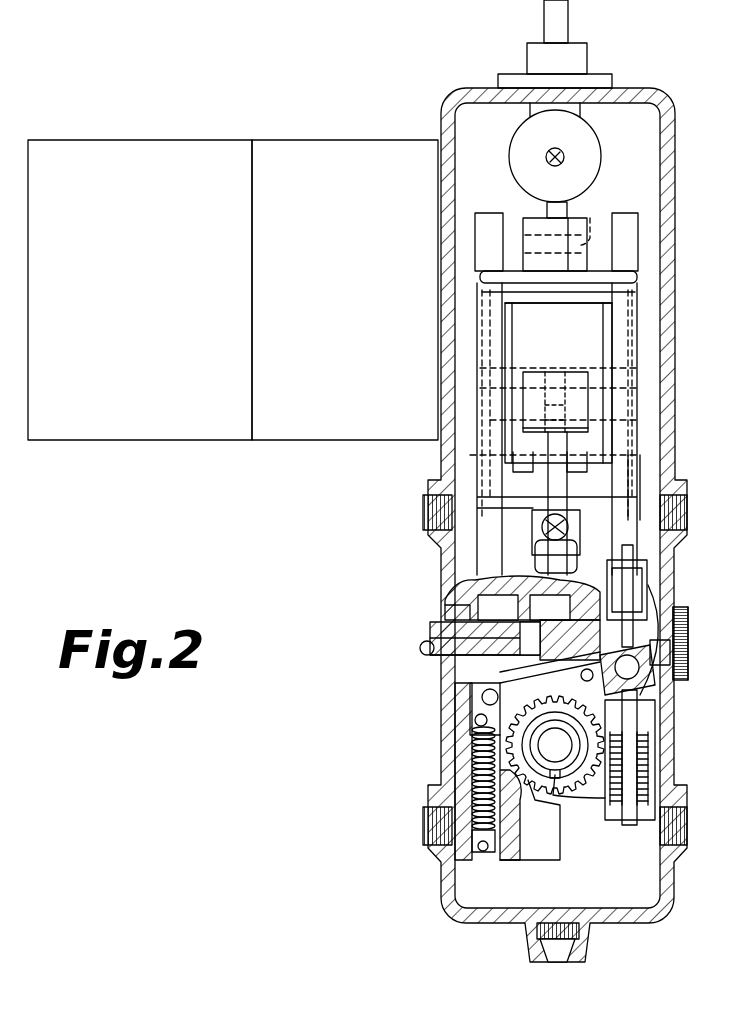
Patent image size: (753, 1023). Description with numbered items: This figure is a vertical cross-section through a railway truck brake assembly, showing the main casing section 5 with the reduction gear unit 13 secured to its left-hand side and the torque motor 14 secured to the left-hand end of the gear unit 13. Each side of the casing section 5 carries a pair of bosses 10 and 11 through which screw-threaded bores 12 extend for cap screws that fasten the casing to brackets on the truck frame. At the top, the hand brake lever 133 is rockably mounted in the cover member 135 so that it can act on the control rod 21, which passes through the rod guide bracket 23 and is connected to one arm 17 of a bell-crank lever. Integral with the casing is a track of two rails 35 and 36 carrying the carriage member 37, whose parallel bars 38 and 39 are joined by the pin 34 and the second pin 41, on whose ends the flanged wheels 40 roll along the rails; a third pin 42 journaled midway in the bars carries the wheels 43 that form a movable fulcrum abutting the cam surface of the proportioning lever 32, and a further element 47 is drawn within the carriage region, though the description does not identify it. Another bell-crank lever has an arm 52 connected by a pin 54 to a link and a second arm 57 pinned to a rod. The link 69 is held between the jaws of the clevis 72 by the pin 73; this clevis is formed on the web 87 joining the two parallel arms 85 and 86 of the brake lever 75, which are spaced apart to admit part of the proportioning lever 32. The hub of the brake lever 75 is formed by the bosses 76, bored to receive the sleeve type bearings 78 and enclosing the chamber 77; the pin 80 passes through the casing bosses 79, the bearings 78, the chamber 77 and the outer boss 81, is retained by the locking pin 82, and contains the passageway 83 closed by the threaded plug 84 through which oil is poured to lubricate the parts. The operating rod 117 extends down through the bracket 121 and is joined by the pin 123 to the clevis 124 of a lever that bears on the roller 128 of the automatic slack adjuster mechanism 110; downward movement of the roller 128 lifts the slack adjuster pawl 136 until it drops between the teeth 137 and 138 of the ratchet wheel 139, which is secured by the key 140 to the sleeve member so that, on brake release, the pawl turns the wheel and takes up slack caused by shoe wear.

The main casing section 5 is at (670, 190).
The boss 10 is at (432, 487).
The boss 11 is at (432, 795).
The screw-threaded bore 12 is at (423, 507).
The reduction gear unit 13 is at (305, 418).
The torque motor 14 is at (104, 418).
The arm 17 is at (555, 207).
The control rod 21 is at (565, 158).
The rod guide bracket 23 is at (578, 131).
The proportioning lever 32 is at (592, 332).
The pin 34 is at (620, 373).
The rail 35 is at (479, 222).
The rail 36 is at (632, 222).
The carriage member 37 is at (620, 500).
The bar 38 is at (534, 520).
The bar 39 is at (600, 497).
The flanged wheel 40 is at (482, 355).
The second pin 41 is at (640, 462).
The third pin 42 is at (630, 421).
The wheel 43 is at (538, 458).
The contact block 47 is at (557, 392).
The arm 52 is at (558, 484).
The pin 54 is at (542, 530).
The arm 57 is at (548, 545).
The link 69 is at (553, 262).
The clevis 72 is at (540, 228).
The pin 73 is at (594, 222).
The brake lever 75 is at (512, 590).
The boss 76 is at (478, 610).
The chamber 77 is at (547, 620).
The sleeve type bearing 78 is at (525, 620).
The boss 79 is at (455, 675).
The pin 80 is at (440, 630).
The boss 81 is at (665, 605).
The locking pin 82 is at (680, 635).
The passageway 83 is at (440, 655).
The threaded plug 84 is at (420, 650).
The arm 85 is at (490, 330).
The arm 86 is at (625, 312).
The web 87 is at (585, 277).
The automatic slack adjuster mechanism 110 is at (650, 688).
The operating rod 117 is at (633, 560).
The bracket 121 is at (600, 574).
The pin 123 is at (680, 617).
The clevis 124 is at (647, 580).
The roller 128 is at (655, 653).
The hand brake lever 133 is at (566, 19).
The cover member 135 is at (580, 52).
The slack adjuster pawl 136 is at (500, 755).
The tooth 137 is at (490, 724).
The tooth 138 is at (478, 745).
The ratchet wheel 139 is at (548, 800).
The key 140 is at (560, 782).